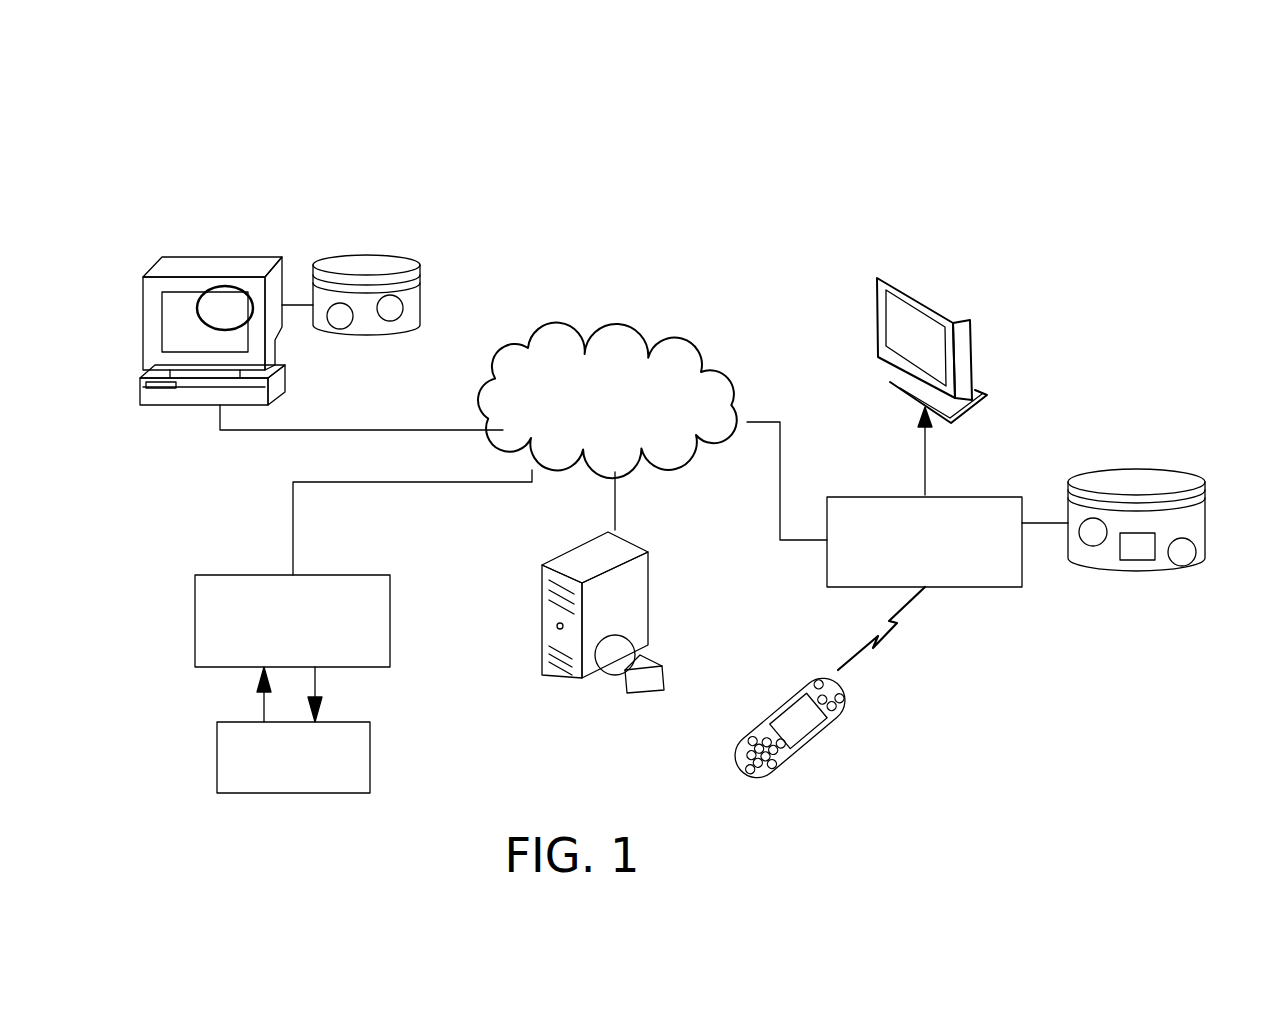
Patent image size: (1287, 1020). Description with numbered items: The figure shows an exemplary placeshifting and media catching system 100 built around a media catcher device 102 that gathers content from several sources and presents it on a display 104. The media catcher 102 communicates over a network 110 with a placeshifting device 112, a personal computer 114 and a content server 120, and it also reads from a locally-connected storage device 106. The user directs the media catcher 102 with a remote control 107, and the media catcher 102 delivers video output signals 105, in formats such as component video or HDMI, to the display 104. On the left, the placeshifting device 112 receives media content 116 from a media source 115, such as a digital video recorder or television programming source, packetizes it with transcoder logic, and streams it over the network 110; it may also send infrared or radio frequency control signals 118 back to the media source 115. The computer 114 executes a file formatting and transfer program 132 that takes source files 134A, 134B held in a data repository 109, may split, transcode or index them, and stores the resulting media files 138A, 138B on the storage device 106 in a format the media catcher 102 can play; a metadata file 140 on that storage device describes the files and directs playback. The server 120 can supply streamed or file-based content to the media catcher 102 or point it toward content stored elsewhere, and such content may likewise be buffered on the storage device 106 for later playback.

The placeshifting and media catching system 100 is at (977, 83).
The media catcher device 102 is at (980, 575).
The display 104 is at (967, 367).
The video output signals 105 is at (925, 467).
The storage device 106 is at (1190, 522).
The remote control 107 is at (830, 712).
The data repository 109 is at (358, 265).
The network 110 is at (675, 350).
The placeshifting device 112 is at (195, 637).
The personal computer 114 is at (160, 400).
The media source 115 is at (370, 770).
The media content 116 is at (264, 700).
The control signals 118 is at (315, 690).
The content server 120 is at (632, 610).
The file formatting and transfer program 132 is at (223, 303).
The source file 134A is at (340, 318).
The source file 134B is at (393, 312).
The media file 138A is at (1092, 536).
The media file 138B is at (1182, 552).
The metadata file 140 is at (1143, 552).